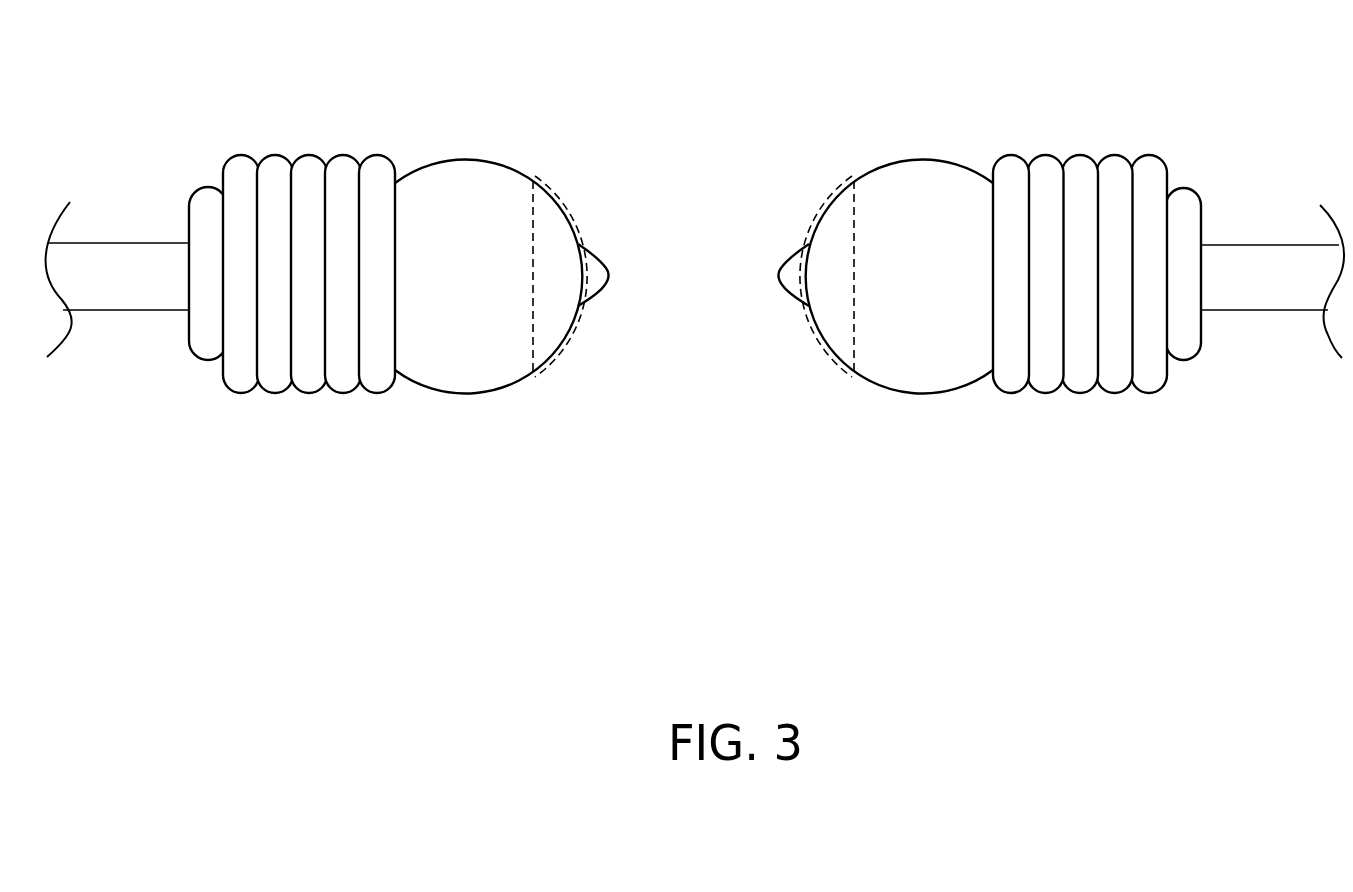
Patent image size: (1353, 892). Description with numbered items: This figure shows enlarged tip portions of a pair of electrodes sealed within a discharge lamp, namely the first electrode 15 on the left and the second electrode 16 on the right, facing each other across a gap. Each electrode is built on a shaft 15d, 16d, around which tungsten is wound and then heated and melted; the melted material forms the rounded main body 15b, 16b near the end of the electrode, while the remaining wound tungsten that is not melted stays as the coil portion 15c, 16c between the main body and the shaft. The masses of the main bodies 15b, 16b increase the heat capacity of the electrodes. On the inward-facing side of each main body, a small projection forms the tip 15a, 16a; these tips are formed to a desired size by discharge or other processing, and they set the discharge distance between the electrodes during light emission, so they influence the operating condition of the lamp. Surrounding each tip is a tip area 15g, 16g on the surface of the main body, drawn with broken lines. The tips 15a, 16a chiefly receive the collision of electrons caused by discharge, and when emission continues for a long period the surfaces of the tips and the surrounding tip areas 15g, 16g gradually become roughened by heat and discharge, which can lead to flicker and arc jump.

The first electrode 15 is at (377, 114).
The tip 15a is at (588, 246).
The main body 15b is at (478, 158).
The coil portion 15c is at (307, 395).
The shaft 15d is at (140, 311).
The tip area 15g is at (548, 365).
The second electrode 16 is at (928, 115).
The tip 16a is at (790, 299).
The main body 16b is at (880, 388).
The coil portion 16c is at (1040, 394).
The shaft 16d is at (1287, 311).
The tip area 16g is at (826, 204).